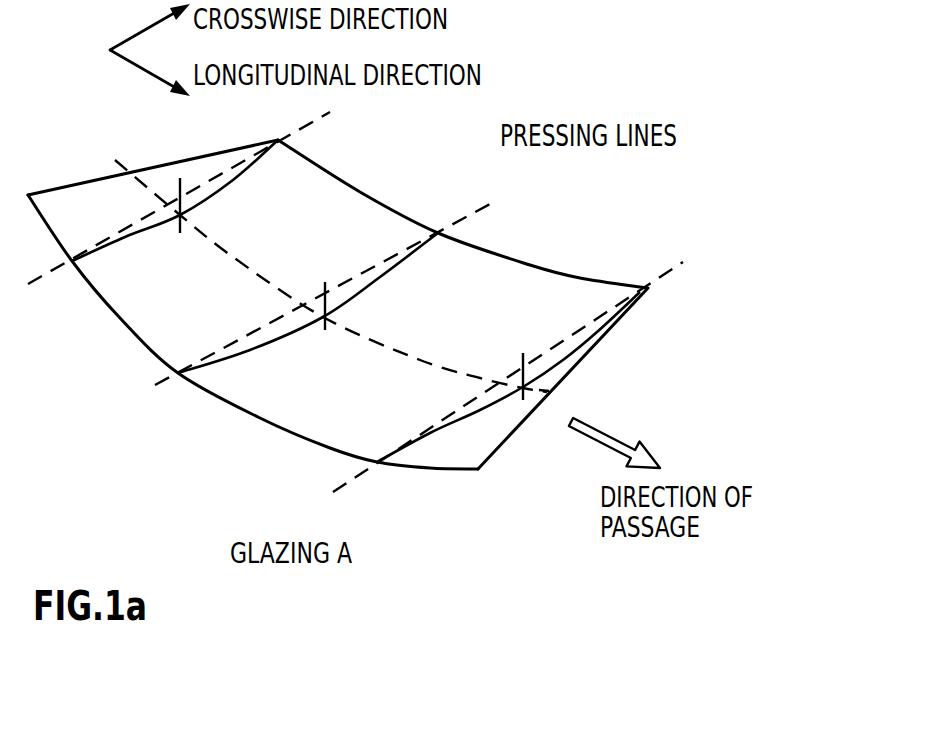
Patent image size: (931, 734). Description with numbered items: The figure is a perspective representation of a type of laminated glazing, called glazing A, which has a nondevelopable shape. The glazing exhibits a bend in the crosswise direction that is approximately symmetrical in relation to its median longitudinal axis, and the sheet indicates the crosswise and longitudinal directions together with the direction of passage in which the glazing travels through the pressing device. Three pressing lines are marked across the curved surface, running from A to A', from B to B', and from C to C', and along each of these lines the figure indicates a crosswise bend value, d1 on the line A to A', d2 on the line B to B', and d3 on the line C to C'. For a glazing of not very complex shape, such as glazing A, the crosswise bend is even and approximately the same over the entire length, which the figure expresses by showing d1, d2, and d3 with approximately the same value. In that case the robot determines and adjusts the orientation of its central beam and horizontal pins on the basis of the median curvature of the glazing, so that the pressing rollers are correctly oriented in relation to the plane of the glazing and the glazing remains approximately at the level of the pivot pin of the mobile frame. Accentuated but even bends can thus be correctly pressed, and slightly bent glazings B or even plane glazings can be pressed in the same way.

The crosswise bend value d1 is at (521, 374).
The crosswise bend value d2 is at (321, 306).
The crosswise bend value d3 is at (190, 205).
The glazing A is at (508, 388).
The pressing line A-A' end point A' is at (539, 365).
The glazing B is at (313, 302).
The pressing line B-B' end point B' is at (326, 281).
The pressing line C-C' end point C is at (177, 198).
The pressing line C-C' end point C' is at (191, 180).